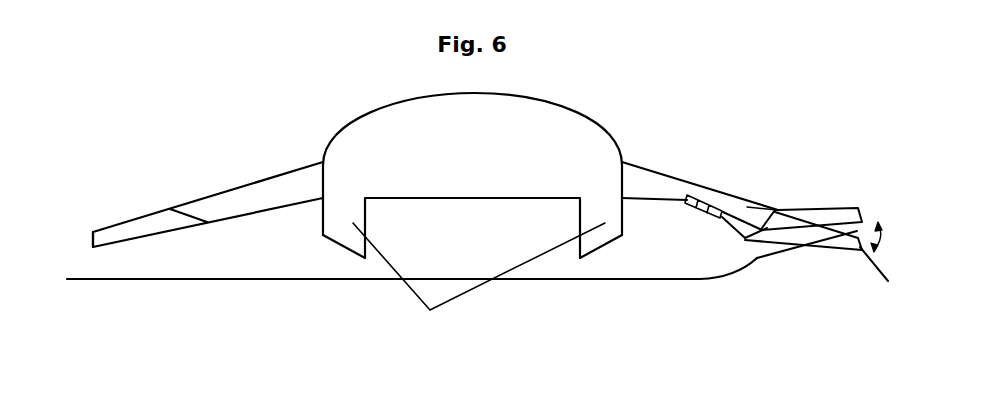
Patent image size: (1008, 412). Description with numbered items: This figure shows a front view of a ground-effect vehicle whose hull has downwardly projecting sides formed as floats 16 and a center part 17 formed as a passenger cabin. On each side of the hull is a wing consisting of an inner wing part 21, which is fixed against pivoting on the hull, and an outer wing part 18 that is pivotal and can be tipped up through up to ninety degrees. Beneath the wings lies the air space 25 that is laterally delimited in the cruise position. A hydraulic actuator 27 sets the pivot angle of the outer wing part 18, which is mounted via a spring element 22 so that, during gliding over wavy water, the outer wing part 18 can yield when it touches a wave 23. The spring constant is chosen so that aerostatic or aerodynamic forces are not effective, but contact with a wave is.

The floats 16 is at (479, 289).
The center part 17 is at (472, 164).
The outer wing part 18 is at (123, 230).
The inner wing part 21 is at (218, 207).
The spring element 22 is at (703, 200).
The wave 23 is at (753, 260).
The air space 25 is at (457, 237).
The hydraulic actuator 27 is at (775, 205).